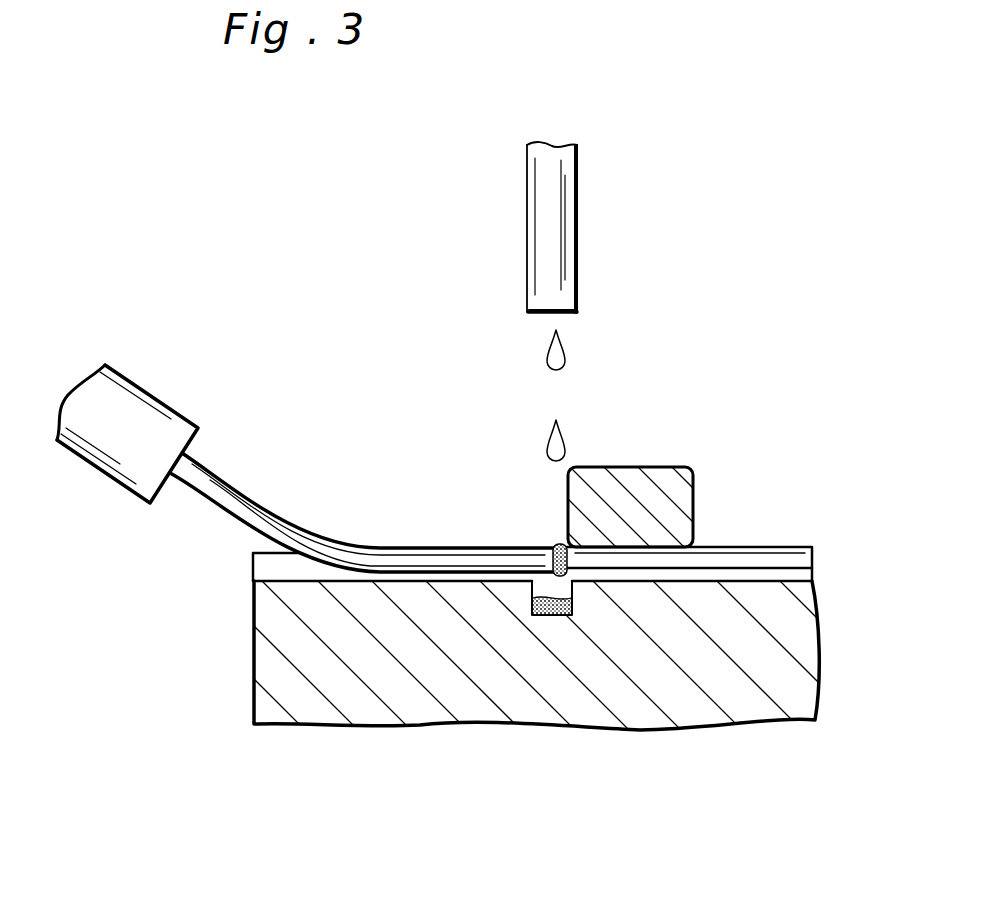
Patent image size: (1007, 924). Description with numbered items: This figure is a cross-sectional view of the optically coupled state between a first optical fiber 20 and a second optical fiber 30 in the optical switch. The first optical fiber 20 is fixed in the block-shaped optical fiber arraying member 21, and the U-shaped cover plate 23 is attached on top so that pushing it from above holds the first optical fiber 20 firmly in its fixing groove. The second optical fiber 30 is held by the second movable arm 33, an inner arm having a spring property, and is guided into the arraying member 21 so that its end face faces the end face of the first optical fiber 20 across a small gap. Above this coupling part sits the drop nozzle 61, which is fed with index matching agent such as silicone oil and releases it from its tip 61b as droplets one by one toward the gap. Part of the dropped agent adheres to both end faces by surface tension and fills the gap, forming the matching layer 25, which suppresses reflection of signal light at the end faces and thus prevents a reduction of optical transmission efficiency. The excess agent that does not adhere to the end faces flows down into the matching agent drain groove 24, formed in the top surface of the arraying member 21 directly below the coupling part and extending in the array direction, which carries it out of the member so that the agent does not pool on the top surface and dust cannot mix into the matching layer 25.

The first optical fiber 20 is at (753, 557).
The optical fiber arraying member 21 is at (803, 651).
The cover plate 23 is at (627, 478).
The matching agent drain groove 24 is at (540, 586).
The matching layer 25 is at (557, 543).
The second optical fiber 30 is at (272, 522).
The second movable arm 33 is at (135, 418).
The drop nozzle 61 is at (558, 212).
The tip of the drop nozzle 61b is at (548, 313).